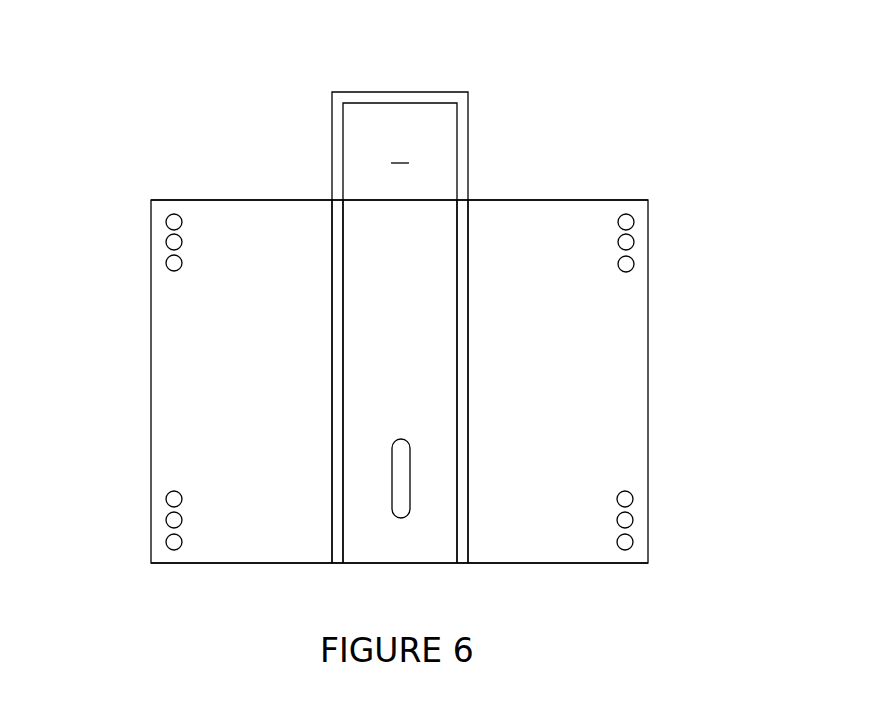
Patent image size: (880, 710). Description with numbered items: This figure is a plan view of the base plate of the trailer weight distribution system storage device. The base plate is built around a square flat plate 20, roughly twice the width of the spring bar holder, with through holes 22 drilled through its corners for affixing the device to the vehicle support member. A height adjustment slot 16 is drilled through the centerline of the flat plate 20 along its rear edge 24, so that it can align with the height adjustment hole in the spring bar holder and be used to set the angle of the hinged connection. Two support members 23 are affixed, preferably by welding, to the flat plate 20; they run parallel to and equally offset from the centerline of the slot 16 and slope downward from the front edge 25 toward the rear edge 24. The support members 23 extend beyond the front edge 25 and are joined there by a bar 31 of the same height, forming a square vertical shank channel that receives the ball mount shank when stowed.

The height adjustment slot 16 is at (398, 518).
The flat plate 20 is at (597, 437).
The through holes 22 is at (165, 240).
The sloped support members 23 is at (340, 410).
The rear edge of the flat plate 24 is at (521, 558).
The front edge of the base plate 25 is at (522, 200).
The bar 31 is at (447, 92).